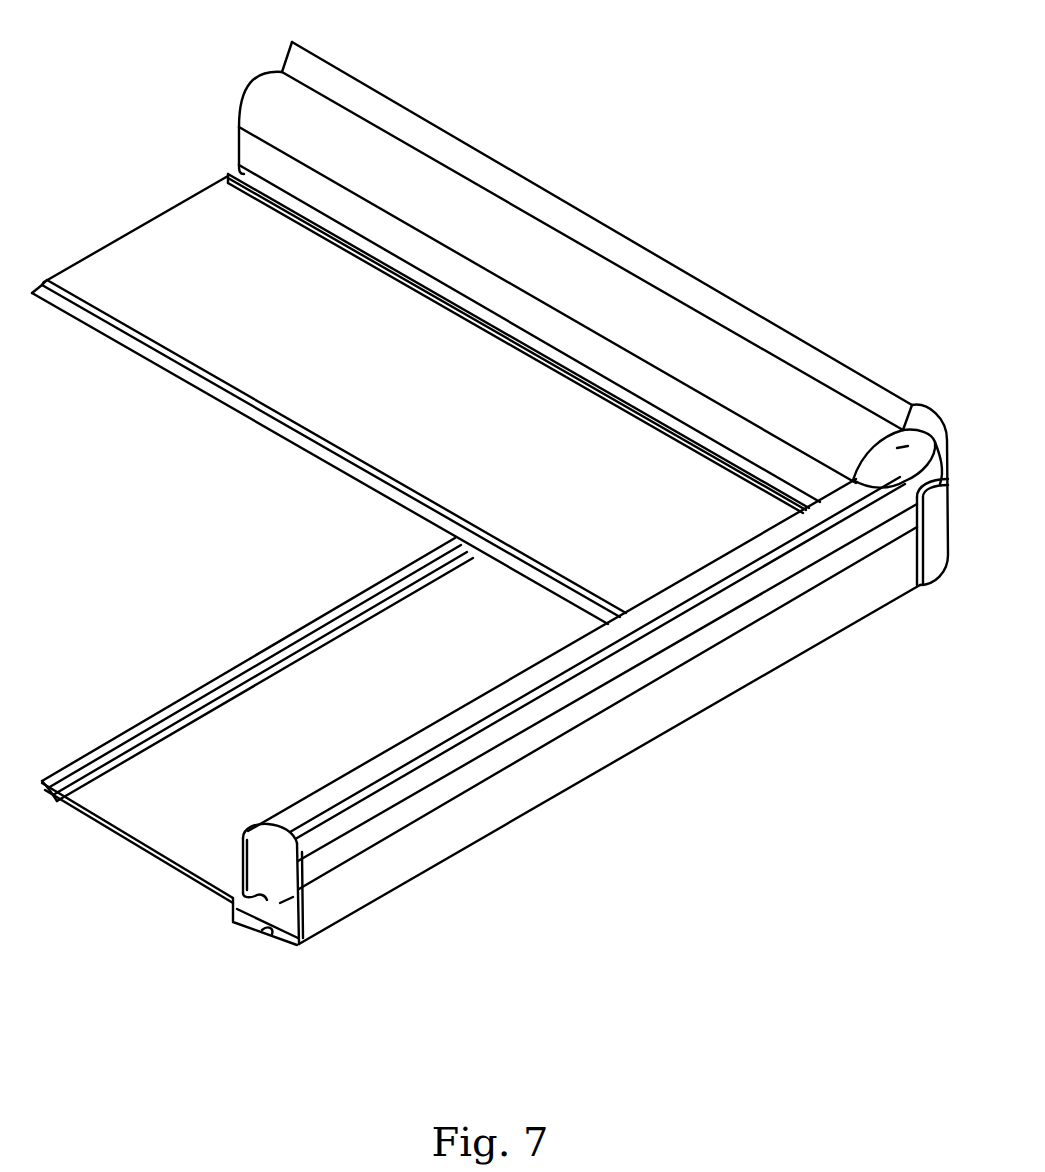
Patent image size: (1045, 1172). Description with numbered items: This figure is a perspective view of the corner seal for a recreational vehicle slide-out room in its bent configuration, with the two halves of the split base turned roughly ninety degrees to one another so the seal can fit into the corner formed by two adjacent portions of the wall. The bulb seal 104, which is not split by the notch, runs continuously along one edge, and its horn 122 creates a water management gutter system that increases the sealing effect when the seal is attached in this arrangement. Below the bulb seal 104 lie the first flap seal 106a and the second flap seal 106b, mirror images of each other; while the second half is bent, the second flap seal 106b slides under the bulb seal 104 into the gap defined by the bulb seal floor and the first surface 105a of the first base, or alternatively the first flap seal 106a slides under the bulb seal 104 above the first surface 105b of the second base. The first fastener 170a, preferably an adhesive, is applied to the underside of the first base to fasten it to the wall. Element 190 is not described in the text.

The bulb seal 104 is at (248, 98).
The horn 122 is at (370, 85).
The first surface 105b is at (240, 172).
The second flap seal 106b is at (138, 240).
The first flap seal 106a is at (162, 755).
The front rail 190 is at (487, 752).
The first surface 105a is at (265, 925).
The first fastener 170a is at (283, 940).